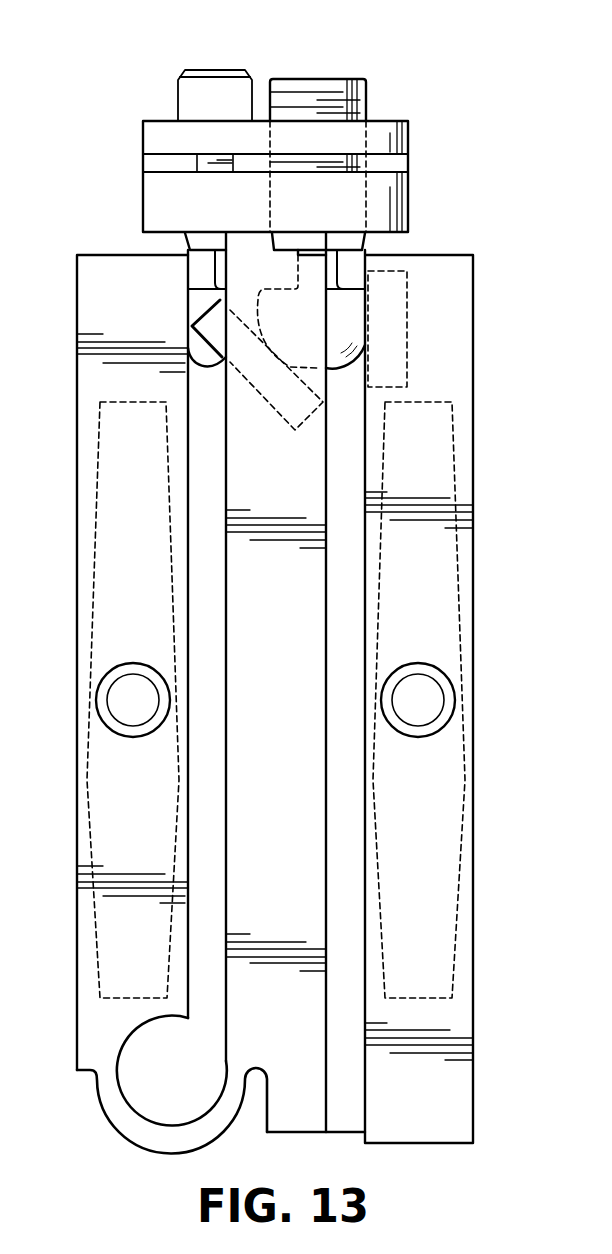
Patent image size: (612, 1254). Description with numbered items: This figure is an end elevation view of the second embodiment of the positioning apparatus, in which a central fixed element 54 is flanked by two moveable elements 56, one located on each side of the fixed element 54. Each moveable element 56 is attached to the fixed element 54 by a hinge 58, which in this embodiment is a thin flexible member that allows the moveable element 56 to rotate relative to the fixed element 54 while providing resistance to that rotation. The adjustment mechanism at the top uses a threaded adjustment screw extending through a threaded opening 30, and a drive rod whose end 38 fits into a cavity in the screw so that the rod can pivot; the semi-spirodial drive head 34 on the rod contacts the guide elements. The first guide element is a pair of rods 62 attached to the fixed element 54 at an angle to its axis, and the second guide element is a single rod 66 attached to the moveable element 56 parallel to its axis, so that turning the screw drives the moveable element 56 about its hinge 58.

The threaded opening 30 is at (365, 202).
The drive head 34 is at (345, 369).
The end of the drive rod 38 is at (317, 78).
The fixed element 54 is at (261, 815).
The moveable elements 56 is at (118, 815).
The hinge 58 is at (170, 1147).
The pair of rods 62 is at (287, 420).
The single rod 66 is at (407, 330).